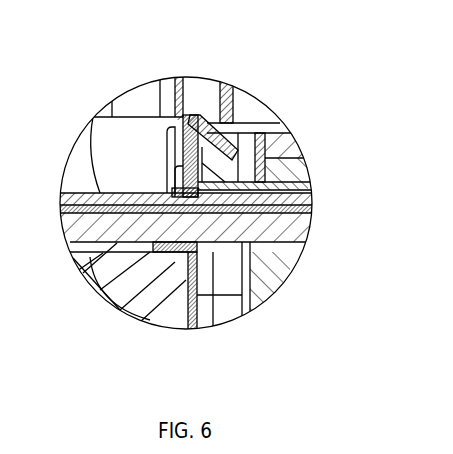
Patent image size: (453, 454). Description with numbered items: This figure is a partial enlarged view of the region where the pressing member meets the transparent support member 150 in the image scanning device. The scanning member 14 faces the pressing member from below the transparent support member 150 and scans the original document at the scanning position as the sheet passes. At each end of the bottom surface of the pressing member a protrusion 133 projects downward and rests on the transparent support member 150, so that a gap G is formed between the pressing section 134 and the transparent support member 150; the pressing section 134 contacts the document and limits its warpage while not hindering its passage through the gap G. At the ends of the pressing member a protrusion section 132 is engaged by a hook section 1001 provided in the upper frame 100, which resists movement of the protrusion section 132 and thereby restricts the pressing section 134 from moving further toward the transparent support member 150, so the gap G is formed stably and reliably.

The scanning member 14 is at (172, 277).
The upper frame 100 is at (253, 100).
The hook section 1001 is at (298, 158).
The protrusion section 132 is at (167, 78).
The protrusion 133 is at (217, 310).
The pressing section 134 is at (102, 113).
The transparent support member 150 is at (250, 225).
The gap G is at (90, 255).